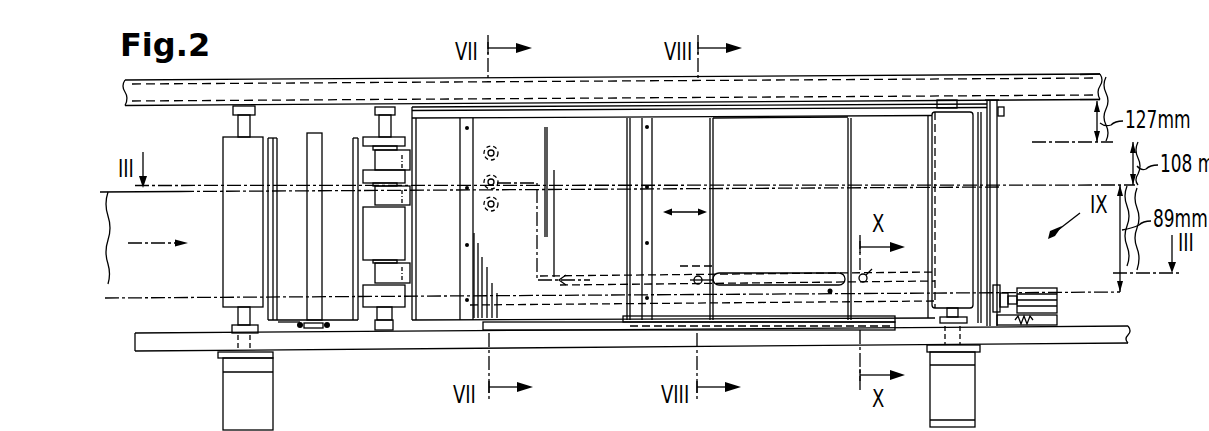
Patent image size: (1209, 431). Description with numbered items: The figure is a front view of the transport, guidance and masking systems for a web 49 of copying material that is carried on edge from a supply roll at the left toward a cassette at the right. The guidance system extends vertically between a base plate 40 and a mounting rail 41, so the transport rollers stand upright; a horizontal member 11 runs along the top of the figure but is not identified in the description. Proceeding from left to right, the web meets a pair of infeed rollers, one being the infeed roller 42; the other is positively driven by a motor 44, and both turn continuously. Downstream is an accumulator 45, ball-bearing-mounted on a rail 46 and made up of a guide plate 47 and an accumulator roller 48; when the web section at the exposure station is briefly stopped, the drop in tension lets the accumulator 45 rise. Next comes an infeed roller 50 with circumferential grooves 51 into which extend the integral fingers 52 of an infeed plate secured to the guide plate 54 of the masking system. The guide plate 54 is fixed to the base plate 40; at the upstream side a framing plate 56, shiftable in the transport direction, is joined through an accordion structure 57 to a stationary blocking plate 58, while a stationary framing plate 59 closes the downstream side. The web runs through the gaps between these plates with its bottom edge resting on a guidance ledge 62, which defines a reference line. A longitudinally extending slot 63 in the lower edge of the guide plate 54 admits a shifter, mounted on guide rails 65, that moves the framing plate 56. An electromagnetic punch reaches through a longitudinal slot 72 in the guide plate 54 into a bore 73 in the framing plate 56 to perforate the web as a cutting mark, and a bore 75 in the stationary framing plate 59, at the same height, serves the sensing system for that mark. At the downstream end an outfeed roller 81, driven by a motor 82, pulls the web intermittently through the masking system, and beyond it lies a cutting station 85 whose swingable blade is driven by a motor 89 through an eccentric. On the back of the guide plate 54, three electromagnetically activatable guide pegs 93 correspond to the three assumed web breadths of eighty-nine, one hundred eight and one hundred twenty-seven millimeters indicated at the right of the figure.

The support beam 11 is at (806, 72).
The base plate 40 is at (1105, 335).
The mounting rail 41 is at (1100, 80).
The infeed roller 42 is at (228, 182).
The motor 44 is at (263, 400).
The accumulator 45 is at (285, 324).
The rail 46 is at (313, 331).
The guide plate 47 is at (287, 146).
The accumulator roller 48 is at (311, 132).
The web 49 is at (112, 284).
The infeed roller 50 is at (379, 136).
The circumferential grooves 51 is at (375, 163).
The integral fingers 52 is at (403, 190).
The guide plate 54 is at (790, 157).
The framing plate 56 is at (708, 181).
The accordion structure 57 is at (597, 130).
The blocking plate 58 is at (439, 323).
The stationary framing plate 59 is at (860, 174).
The guidance ledge 62 is at (830, 292).
The longitudinally extending slot 63 is at (570, 327).
The guide rails 65 is at (797, 323).
The longitudinal slot 72 is at (802, 273).
The bore 73 is at (706, 281).
The bore 75 is at (876, 274).
The outfeed roller 81 is at (968, 227).
The motor 82 is at (968, 388).
The cutting station 85 is at (1012, 169).
The motor 89 is at (1043, 290).
The guide pegs 93 is at (499, 177).